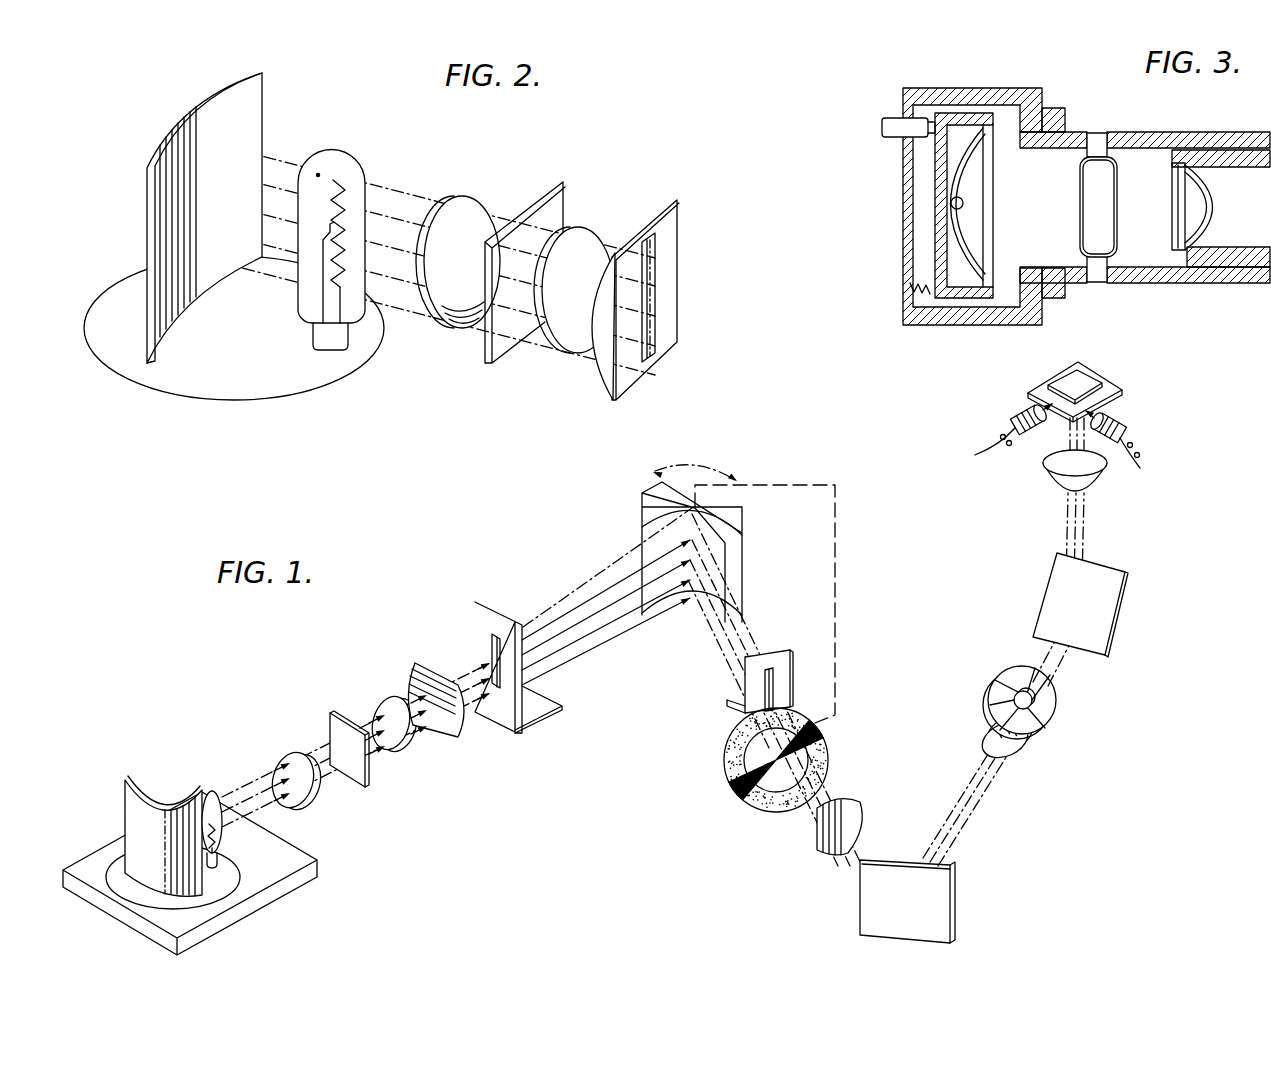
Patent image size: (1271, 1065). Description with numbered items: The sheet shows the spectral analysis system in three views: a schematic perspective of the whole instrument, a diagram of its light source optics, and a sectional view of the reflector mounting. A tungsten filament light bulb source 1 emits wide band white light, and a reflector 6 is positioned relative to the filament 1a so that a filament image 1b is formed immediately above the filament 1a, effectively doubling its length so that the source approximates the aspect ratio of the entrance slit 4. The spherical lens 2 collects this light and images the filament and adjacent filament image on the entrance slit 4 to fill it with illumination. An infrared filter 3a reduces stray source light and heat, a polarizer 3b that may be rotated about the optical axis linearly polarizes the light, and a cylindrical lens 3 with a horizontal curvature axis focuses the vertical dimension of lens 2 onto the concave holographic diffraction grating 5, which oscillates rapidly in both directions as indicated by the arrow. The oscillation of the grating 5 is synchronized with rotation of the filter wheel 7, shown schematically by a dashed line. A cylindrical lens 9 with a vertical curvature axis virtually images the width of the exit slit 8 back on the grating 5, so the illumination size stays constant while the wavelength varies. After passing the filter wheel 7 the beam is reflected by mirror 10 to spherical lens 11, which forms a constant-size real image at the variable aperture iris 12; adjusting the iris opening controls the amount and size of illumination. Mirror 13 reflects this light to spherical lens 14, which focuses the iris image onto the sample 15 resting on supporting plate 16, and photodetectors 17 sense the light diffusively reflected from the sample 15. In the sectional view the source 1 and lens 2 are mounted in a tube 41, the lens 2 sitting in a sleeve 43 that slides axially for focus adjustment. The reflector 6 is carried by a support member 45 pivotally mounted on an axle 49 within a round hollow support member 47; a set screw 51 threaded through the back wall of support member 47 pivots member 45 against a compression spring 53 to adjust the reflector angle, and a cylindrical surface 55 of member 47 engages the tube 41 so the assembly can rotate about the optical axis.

In FIG. 2, the tungsten filament light bulb source 1 is at (336, 232).
In FIG. 3, the tungsten filament light bulb source 1 is at (1117, 200).
In FIG. 1, the tungsten filament light bulb source 1 is at (214, 793).
In FIG. 2, the filament 1a is at (330, 280).
In FIG. 2, the filament image 1b is at (345, 203).
In FIG. 2, the spherical lens 2 is at (478, 216).
In FIG. 3, the spherical lens 2 is at (1210, 220).
In FIG. 1, the spherical lens 2 is at (278, 762).
In FIG. 2, the cylindrical lens 3 is at (660, 298).
In FIG. 1, the cylindrical lens 3 is at (434, 728).
In FIG. 2, the infrared filter 3a is at (560, 210).
In FIG. 1, the infrared filter 3a is at (368, 780).
In FIG. 2, the polarizer 3b is at (555, 350).
In FIG. 1, the polarizer 3b is at (385, 705).
In FIG. 2, the entrance slit 4 is at (658, 257).
In FIG. 1, the entrance slit 4 is at (482, 621).
In FIG. 1, the concave holographic diffraction grating 5 is at (742, 515).
In FIG. 2, the reflector 6 is at (243, 98).
In FIG. 3, the reflector 6 is at (968, 232).
In FIG. 1, the reflector 6 is at (128, 795).
In FIG. 1, the filter wheel 7 is at (750, 800).
In FIG. 1, the exit slit 8 is at (782, 650).
In FIG. 1, the cylindrical lens 9 is at (858, 817).
In FIG. 1, the mirror 10 is at (940, 892).
In FIG. 1, the spherical lens 11 is at (1030, 755).
In FIG. 1, the variable aperture iris 12 is at (1057, 714).
In FIG. 1, the mirror 13 is at (1102, 618).
In FIG. 1, the spherical lens 14 is at (1058, 470).
In FIG. 1, the sample 15 is at (1083, 387).
In FIG. 1, the supporting plate 16 is at (1074, 392).
In FIG. 1, the photodetectors 17 is at (1012, 410).
In FIG. 3, the tube 41 is at (1213, 133).
In FIG. 3, the sleeve 43 is at (1267, 167).
In FIG. 3, the support member 45 is at (935, 218).
In FIG. 3, the support member 47 is at (1010, 88).
In FIG. 3, the axle 49 is at (965, 205).
In FIG. 3, the set screw 51 is at (882, 122).
In FIG. 3, the compression spring 53 is at (910, 283).
In FIG. 3, the cylindrical surface 55 is at (1060, 135).